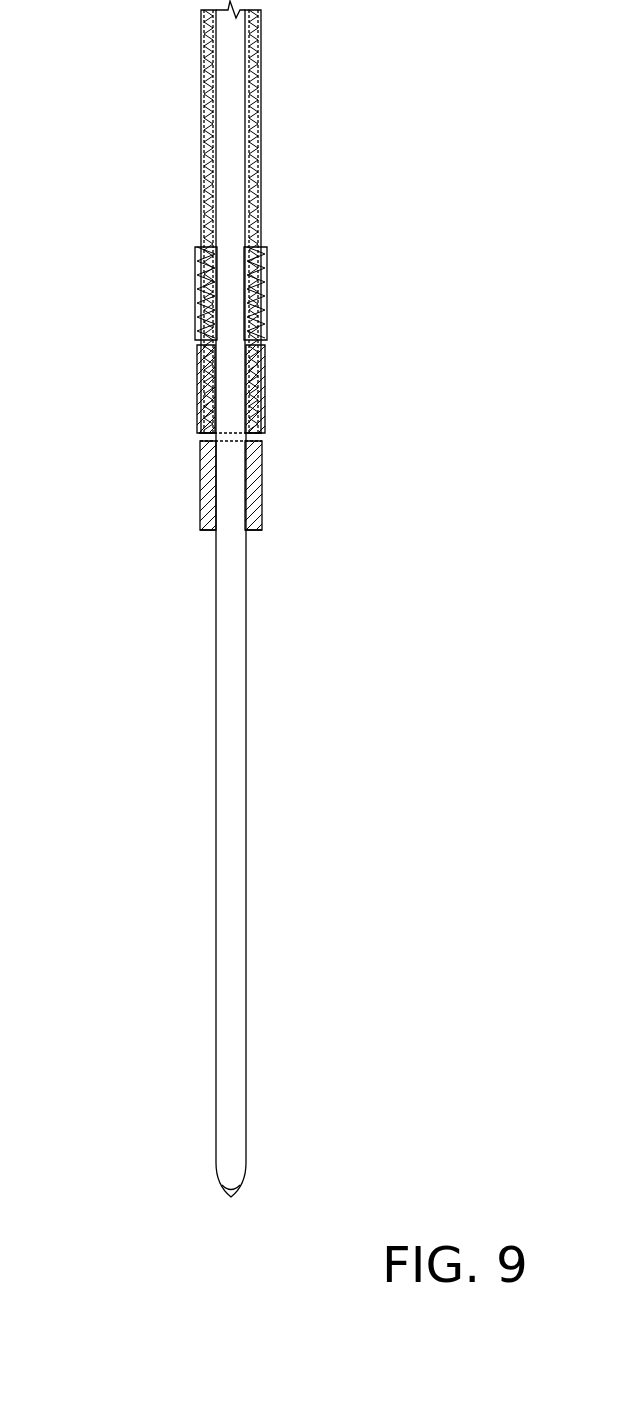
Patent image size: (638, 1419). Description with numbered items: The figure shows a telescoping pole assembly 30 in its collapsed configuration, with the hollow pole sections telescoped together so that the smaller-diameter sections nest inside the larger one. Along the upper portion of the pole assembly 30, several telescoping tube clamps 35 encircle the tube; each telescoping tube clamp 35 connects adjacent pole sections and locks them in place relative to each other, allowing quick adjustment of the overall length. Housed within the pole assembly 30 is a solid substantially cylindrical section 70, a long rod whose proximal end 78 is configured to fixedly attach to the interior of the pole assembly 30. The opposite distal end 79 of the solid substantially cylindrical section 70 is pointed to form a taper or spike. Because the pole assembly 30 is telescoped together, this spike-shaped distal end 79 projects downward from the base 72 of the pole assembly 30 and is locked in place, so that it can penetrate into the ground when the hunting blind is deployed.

The pole assembly 30 is at (261, 163).
The telescoping tube clamp 35 is at (203, 483).
The solid substantially cylindrical section 70 is at (234, 810).
The base 72 is at (253, 532).
The proximal end 78 is at (231, 450).
The distal end 79 is at (231, 1197).